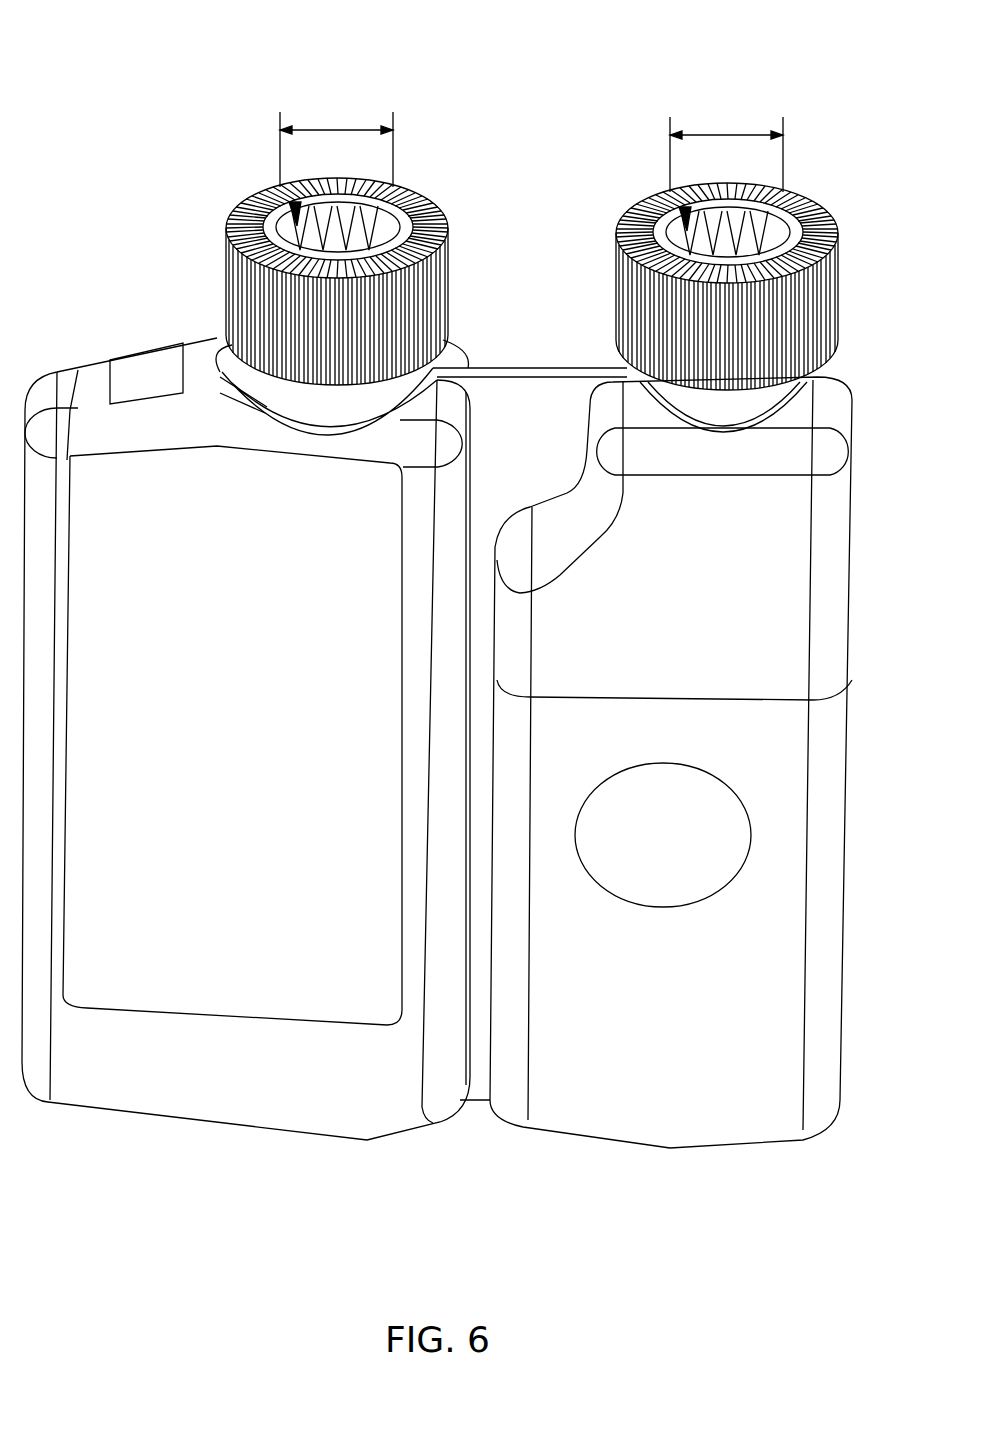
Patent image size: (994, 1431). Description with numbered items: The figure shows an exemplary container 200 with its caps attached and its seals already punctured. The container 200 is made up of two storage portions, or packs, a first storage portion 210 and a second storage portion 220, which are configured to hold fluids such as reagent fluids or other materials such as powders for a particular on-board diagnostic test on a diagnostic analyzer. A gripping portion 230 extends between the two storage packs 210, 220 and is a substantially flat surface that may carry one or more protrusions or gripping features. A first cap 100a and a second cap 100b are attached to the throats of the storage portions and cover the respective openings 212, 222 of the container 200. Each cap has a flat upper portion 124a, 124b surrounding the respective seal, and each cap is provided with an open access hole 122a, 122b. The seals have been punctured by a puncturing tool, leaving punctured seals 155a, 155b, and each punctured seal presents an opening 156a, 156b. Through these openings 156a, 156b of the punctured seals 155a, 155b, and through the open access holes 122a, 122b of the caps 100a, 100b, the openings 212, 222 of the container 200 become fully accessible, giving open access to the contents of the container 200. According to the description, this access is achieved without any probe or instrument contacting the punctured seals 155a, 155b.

The container 200 is at (142, 75).
The storage portion 210 is at (242, 1095).
The storage portion 220 is at (655, 1120).
The gripping portion 230 is at (532, 407).
The cap 100a is at (230, 297).
The cap 100b is at (615, 277).
The open access hole 122a is at (321, 204).
The open access hole 122b is at (673, 172).
The opening 212 is at (282, 185).
The opening 222 is at (670, 197).
The flat upper portion 124a is at (237, 222).
The flat upper portion 124b is at (633, 217).
The punctured seal 155a is at (400, 217).
The punctured seal 155b is at (787, 222).
The opening 156a is at (337, 128).
The opening 156b is at (727, 137).